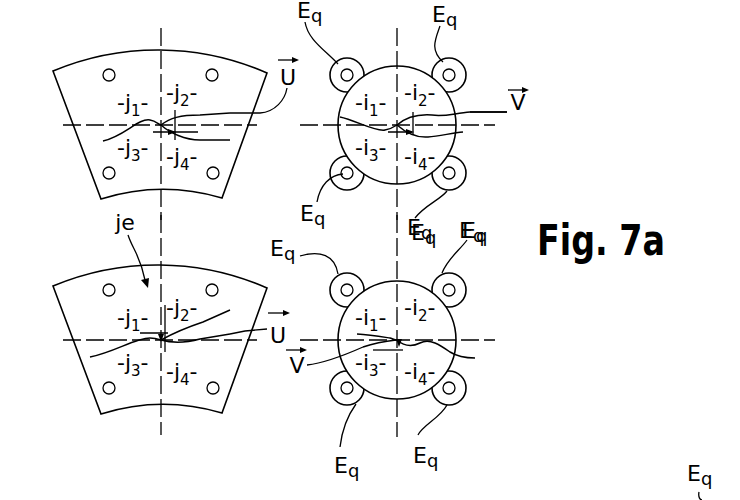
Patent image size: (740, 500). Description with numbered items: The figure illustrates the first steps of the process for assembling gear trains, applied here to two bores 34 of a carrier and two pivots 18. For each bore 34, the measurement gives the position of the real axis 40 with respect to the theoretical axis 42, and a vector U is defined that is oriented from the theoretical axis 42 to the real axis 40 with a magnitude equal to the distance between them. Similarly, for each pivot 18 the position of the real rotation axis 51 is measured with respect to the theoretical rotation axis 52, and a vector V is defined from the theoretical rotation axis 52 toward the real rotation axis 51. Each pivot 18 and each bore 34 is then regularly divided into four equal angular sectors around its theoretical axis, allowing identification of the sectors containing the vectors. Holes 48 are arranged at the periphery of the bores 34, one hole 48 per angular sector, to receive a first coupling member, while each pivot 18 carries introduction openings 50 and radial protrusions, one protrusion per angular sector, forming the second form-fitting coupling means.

The pivot 18 is at (424, 227).
The bore 34 is at (147, 65).
The real axis 40 is at (230, 140).
The theoretical axis 42 is at (103, 141).
The hole 48 is at (108, 69).
The introduction opening 50 is at (350, 70).
The real rotation axis 51 is at (463, 132).
The theoretical rotation axis 52 is at (340, 117).